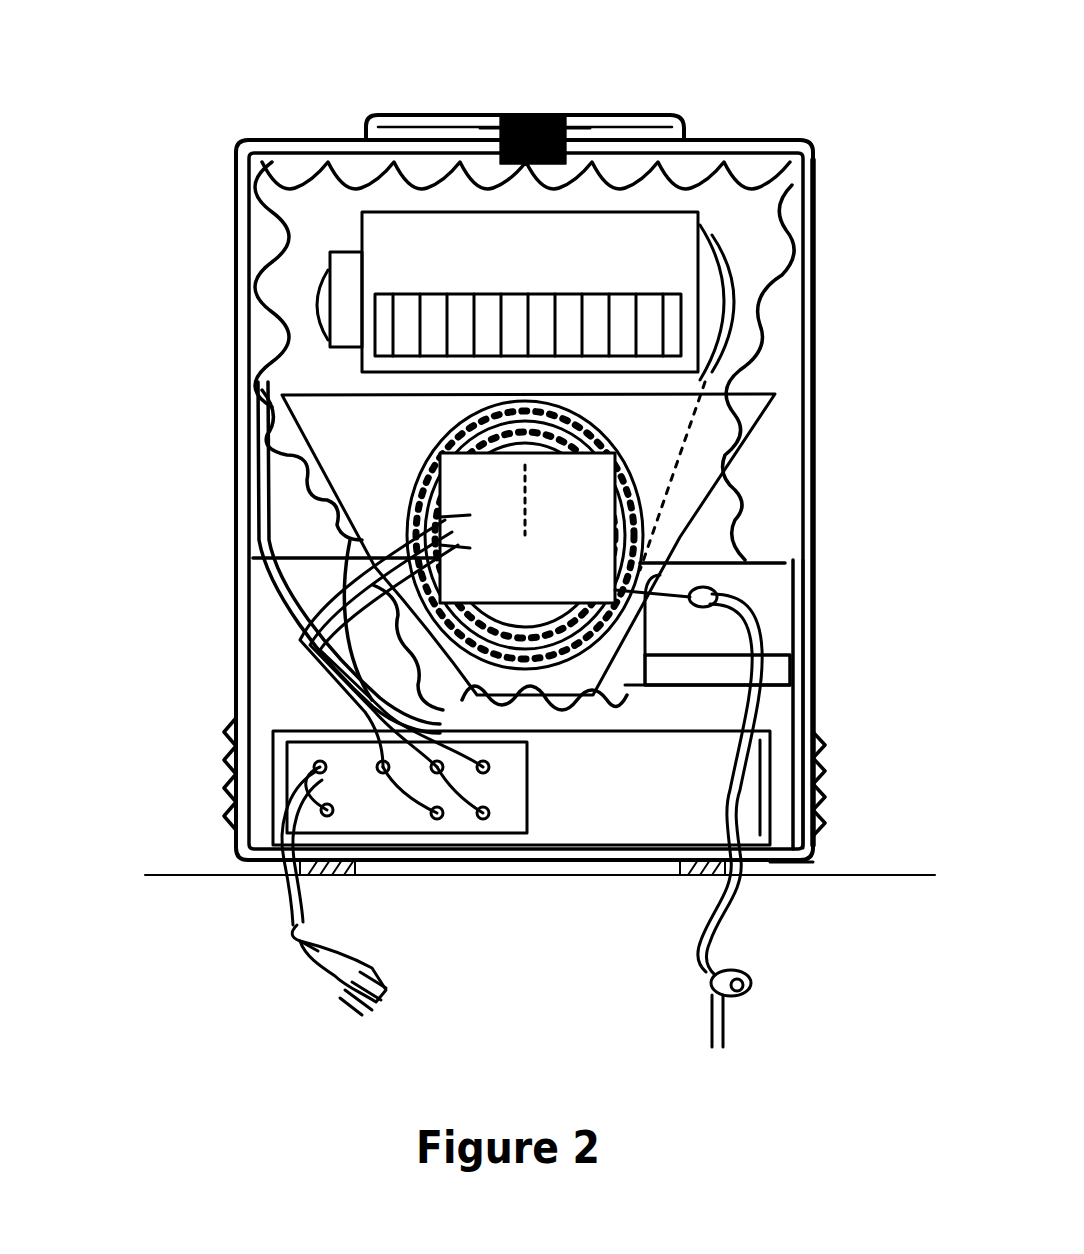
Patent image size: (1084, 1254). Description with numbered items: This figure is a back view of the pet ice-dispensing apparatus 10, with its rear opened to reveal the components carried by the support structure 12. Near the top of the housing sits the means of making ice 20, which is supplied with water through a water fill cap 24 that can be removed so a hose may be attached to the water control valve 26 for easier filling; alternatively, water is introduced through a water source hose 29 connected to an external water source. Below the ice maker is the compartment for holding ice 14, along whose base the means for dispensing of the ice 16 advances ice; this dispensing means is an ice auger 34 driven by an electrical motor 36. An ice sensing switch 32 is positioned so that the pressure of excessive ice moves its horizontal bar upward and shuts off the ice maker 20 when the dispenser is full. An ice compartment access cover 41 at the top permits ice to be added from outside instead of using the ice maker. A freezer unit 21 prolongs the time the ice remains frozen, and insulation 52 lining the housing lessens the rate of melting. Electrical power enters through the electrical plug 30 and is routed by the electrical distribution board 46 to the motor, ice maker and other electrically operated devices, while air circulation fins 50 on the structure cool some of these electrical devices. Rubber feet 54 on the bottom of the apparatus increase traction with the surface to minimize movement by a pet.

The apparatus 10 is at (210, 553).
The support structure 12 is at (638, 848).
The compartment for holding ice 14 is at (387, 442).
The means for dispensing of the ice 16 is at (385, 474).
The means of making ice 20 is at (530, 262).
The freezer unit 21 is at (590, 775).
The water fill cap 24 is at (505, 135).
The water control valve 26 is at (693, 640).
The water source hose 29 is at (723, 848).
The electrical plug 30 is at (333, 962).
The ice sensing switch 32 is at (400, 405).
The ice auger 34 is at (657, 507).
The electrical motor 36 is at (560, 547).
The ice compartment access cover 41 is at (585, 125).
The electrical distribution board 46 is at (417, 780).
The air circulation fins 50 is at (810, 750).
The insulation 52 is at (800, 192).
The rubber feet 54 is at (777, 880).